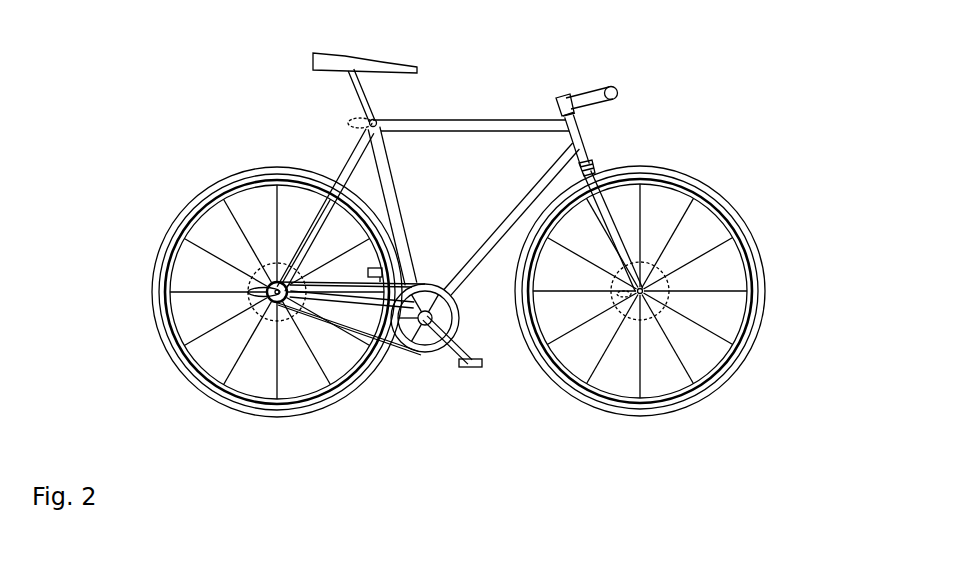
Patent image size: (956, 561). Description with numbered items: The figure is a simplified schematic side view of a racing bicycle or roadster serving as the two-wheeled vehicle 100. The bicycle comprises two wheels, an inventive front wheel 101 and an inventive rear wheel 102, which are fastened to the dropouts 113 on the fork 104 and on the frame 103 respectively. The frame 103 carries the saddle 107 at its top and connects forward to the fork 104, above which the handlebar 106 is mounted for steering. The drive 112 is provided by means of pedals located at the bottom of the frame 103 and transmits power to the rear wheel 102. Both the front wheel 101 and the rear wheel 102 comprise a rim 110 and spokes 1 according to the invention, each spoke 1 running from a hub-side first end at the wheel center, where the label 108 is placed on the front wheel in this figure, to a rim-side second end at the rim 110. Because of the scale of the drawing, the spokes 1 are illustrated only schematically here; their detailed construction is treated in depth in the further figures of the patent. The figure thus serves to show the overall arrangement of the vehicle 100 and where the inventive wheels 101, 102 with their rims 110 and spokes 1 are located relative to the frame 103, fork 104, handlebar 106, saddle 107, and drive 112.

The two-wheeled vehicle 100 is at (188, 83).
The front wheel 101 is at (737, 212).
The rear wheel 102 is at (177, 215).
The frame 103 is at (477, 122).
The fork 104 is at (602, 210).
The handlebar 106 is at (588, 95).
The saddle 107 is at (350, 62).
The front wheel hub 108 is at (647, 290).
The rim 110 is at (740, 327).
The drive 112 is at (439, 260).
The dropouts 113 is at (647, 278).
The spokes 1 is at (732, 293).